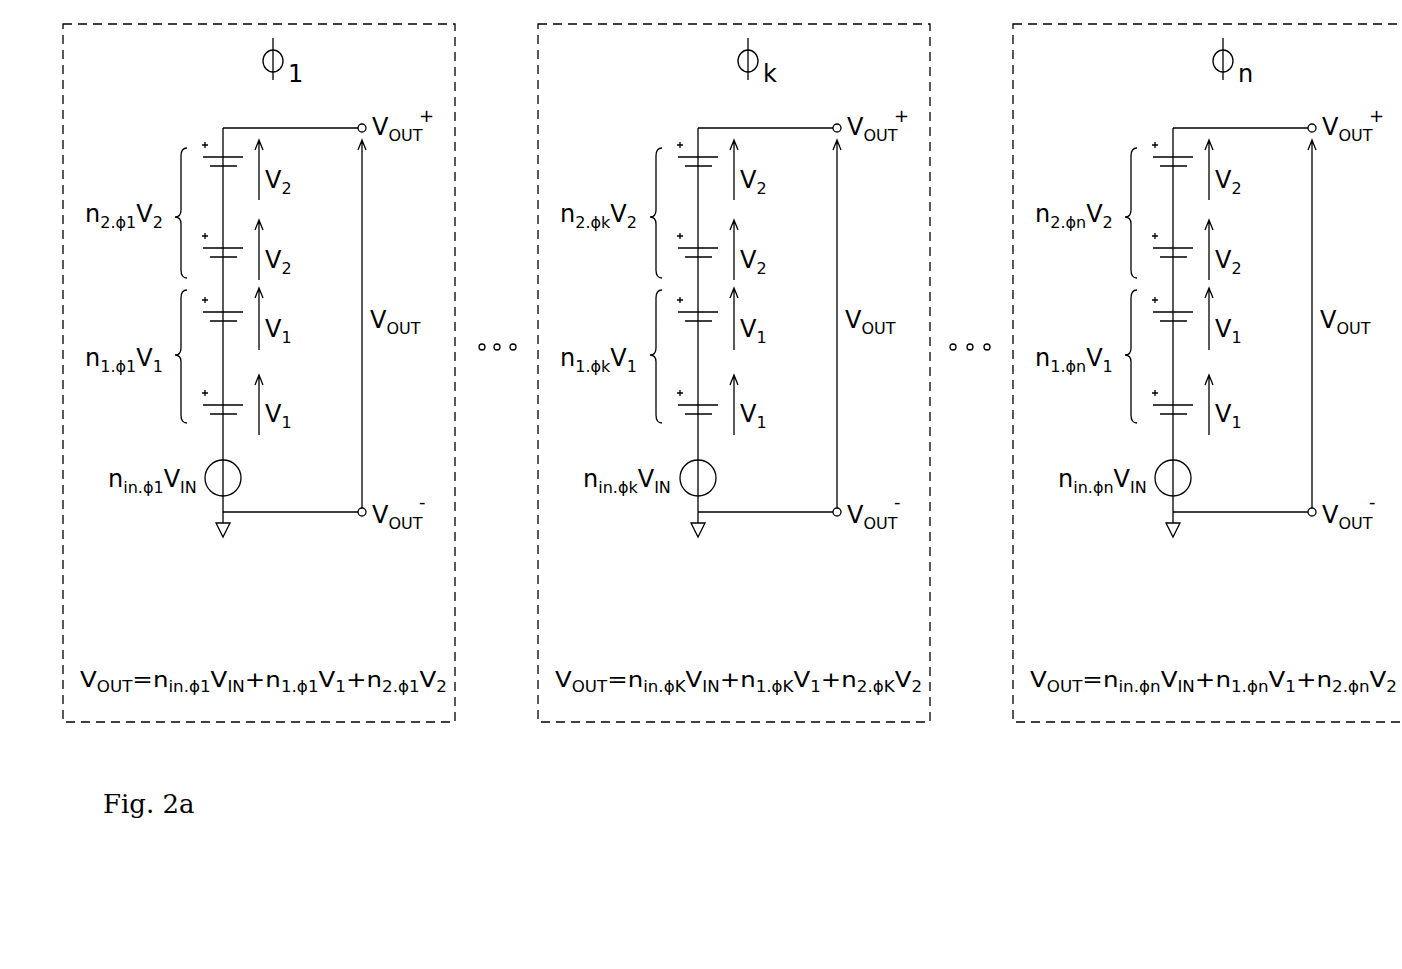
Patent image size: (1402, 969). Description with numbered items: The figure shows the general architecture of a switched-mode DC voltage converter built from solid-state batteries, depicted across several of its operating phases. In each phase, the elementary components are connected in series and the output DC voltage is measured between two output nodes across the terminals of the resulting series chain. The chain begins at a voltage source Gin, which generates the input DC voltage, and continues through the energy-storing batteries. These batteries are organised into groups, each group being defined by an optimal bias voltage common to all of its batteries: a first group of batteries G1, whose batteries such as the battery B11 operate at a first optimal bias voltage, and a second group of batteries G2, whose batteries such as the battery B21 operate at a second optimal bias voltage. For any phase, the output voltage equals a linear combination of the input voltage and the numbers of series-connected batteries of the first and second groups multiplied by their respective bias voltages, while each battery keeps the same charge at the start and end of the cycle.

The first battery of the second group of batteries B21 is at (233, 247).
The first battery of the first group of batteries B11 is at (233, 402).
The second group of batteries G2 is at (166, 257).
The first group of batteries G1 is at (167, 401).
The voltage source Gin is at (241, 487).